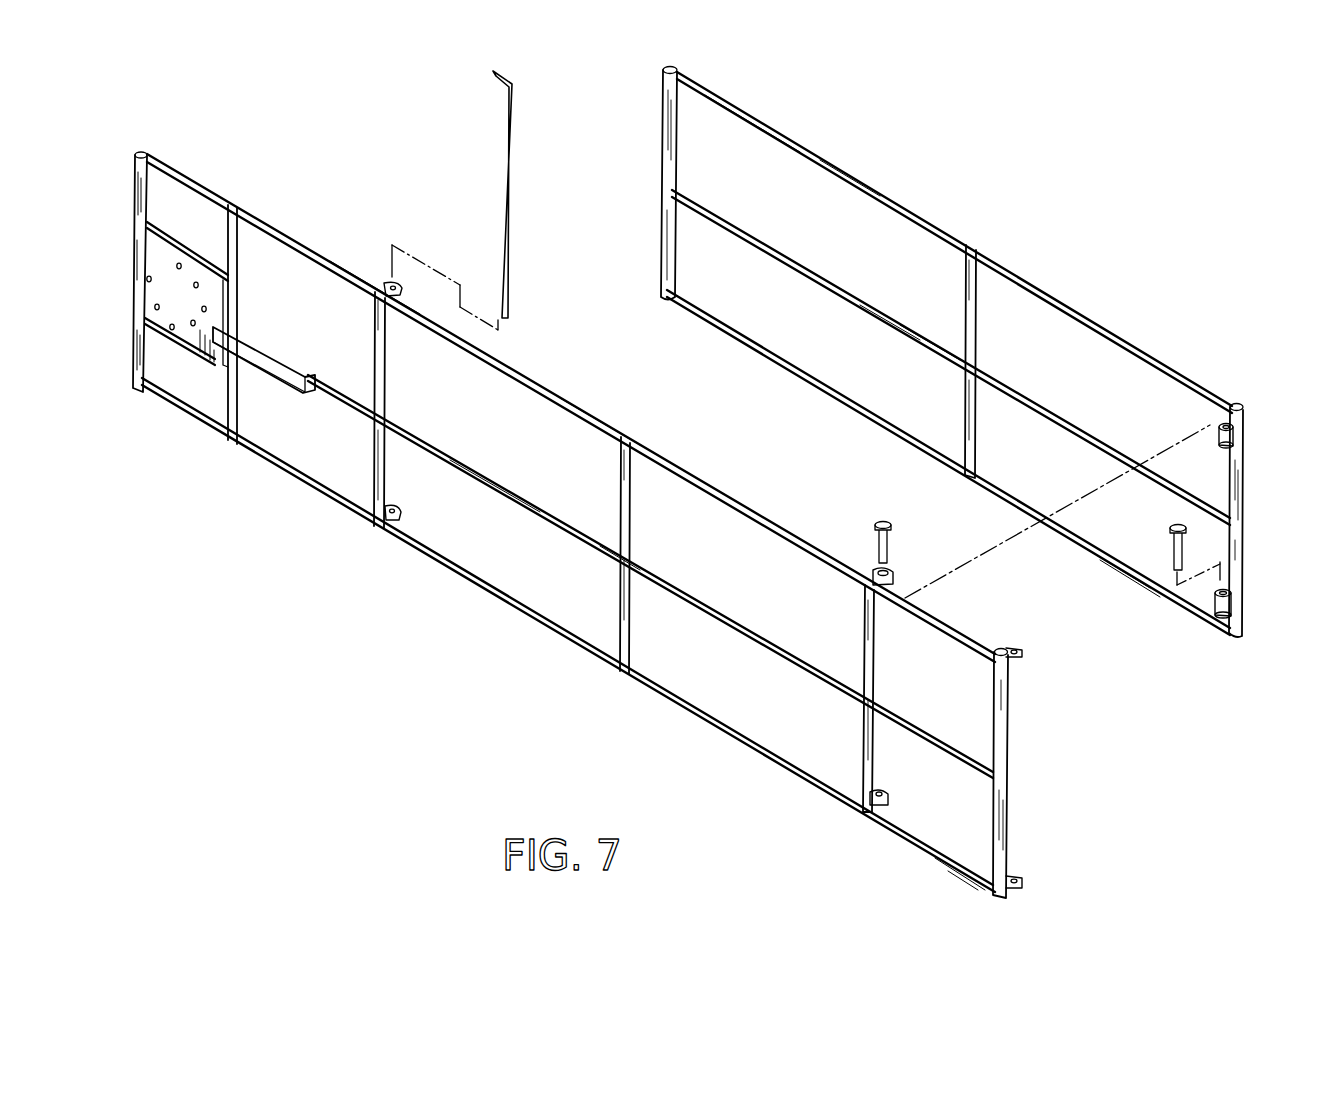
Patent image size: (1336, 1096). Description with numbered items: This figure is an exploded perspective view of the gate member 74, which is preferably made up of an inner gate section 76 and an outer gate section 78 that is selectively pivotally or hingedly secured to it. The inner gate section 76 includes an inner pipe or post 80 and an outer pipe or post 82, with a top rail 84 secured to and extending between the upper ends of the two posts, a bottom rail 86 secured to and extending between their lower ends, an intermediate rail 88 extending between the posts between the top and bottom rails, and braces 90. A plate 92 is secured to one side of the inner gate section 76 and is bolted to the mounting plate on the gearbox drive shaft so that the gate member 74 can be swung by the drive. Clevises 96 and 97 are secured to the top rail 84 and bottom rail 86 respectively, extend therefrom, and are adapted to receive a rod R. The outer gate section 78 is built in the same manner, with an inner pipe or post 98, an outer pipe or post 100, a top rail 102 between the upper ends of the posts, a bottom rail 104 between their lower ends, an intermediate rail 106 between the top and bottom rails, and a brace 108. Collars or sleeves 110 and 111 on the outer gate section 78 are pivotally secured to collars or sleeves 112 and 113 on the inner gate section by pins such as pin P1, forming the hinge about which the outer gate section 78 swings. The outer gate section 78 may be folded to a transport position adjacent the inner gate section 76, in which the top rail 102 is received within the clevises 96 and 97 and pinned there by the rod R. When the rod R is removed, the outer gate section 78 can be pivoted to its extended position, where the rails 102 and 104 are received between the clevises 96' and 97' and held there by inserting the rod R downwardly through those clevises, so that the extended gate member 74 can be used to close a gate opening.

The gate member 74 is at (740, 487).
The inner gate section 76 is at (680, 715).
The outer gate section 78 is at (1003, 237).
The inner pipe or post 80 is at (149, 183).
The outer pipe or post 82 is at (1005, 720).
The top rail 84 is at (543, 388).
The bottom rail 86 is at (520, 613).
The intermediate rail 88 is at (707, 600).
The braces 90 is at (385, 388).
The plate 92 is at (203, 293).
The clevis 96 is at (382, 233).
The clevis 96' is at (1062, 683).
The clevis 97 is at (458, 537).
The clevis 97' is at (1102, 872).
The inner pipe or post 98 is at (1243, 497).
The outer pipe or post 100 is at (660, 143).
The top rail 102 is at (808, 148).
The bottom rail 104 is at (868, 415).
The intermediate rail 106 is at (1063, 423).
The brace 108 is at (980, 315).
The collar or sleeve 110 is at (1237, 432).
The collar or sleeve 111 is at (1233, 612).
The collar or sleeve 112 is at (897, 580).
The collar or sleeve 113 is at (887, 797).
The pin P1 is at (887, 543).
The rod R is at (510, 203).